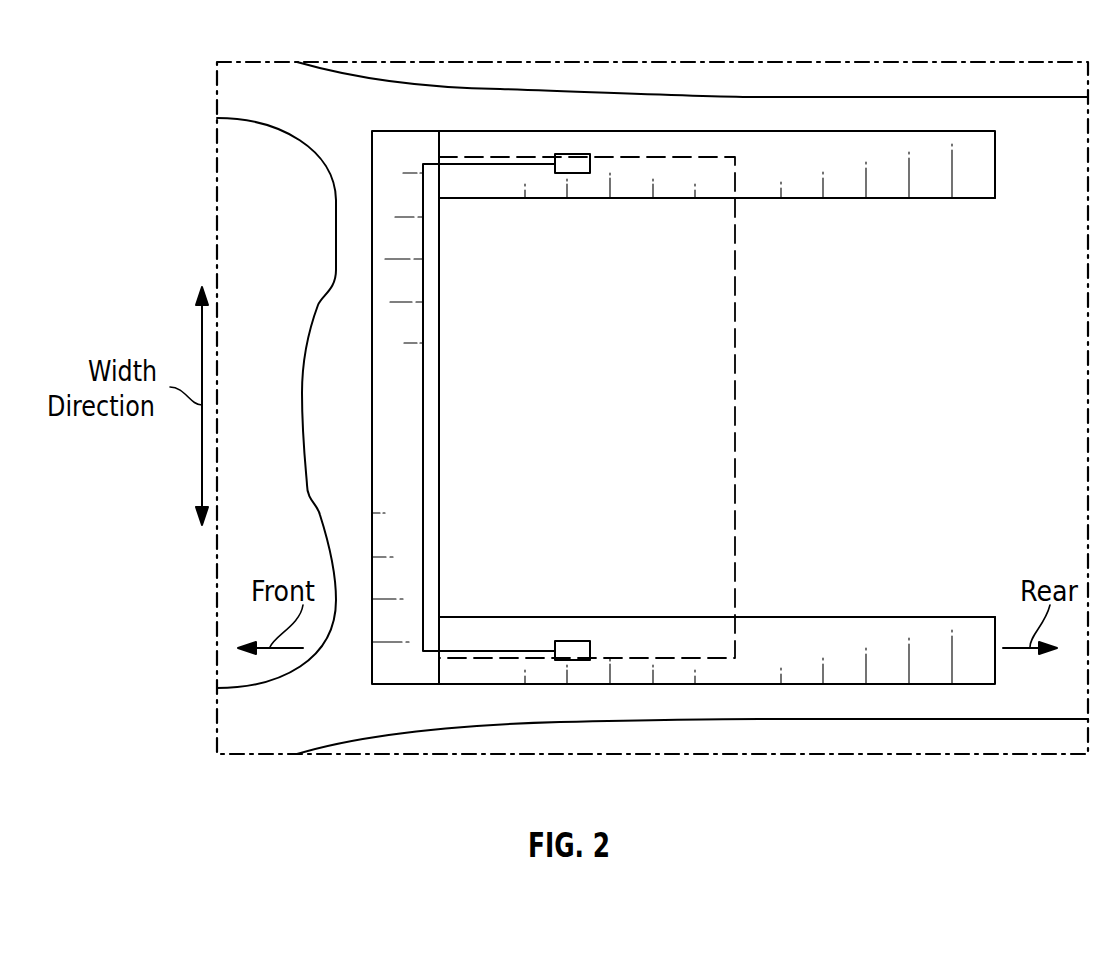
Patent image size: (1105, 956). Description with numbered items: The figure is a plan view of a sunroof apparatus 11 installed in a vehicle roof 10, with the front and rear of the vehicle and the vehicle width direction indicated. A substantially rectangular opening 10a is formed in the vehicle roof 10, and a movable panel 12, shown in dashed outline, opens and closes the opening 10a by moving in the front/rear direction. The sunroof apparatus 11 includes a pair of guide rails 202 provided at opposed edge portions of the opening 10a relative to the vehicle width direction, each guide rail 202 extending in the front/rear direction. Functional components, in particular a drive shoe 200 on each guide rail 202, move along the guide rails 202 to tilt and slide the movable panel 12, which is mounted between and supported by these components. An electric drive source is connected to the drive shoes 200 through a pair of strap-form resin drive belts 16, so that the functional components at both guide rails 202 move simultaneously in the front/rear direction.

The vehicle roof 10 is at (873, 705).
The opening 10a is at (616, 436).
The sunroof apparatus 11 is at (890, 83).
The movable panel 12 is at (754, 329).
The drive belts 16 is at (423, 432).
The drive shoe 200 is at (590, 164).
The guide rails 202 is at (753, 131).